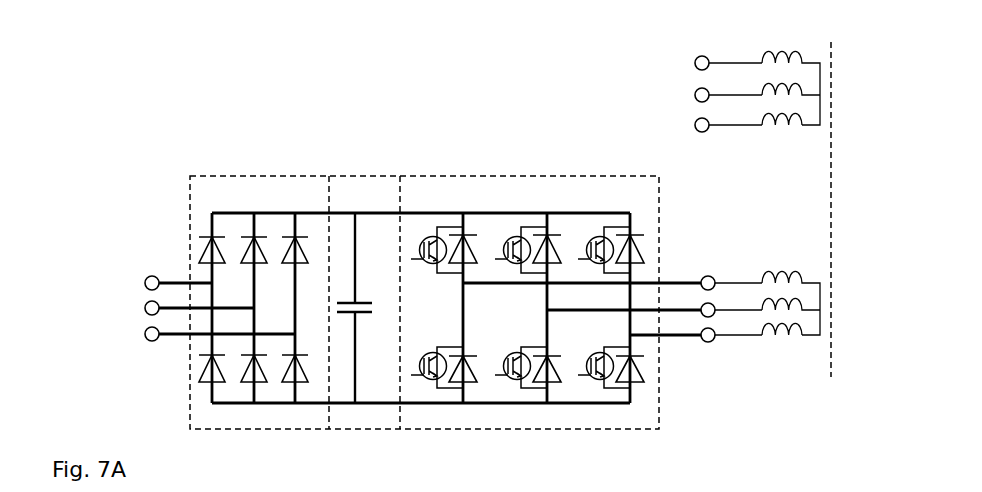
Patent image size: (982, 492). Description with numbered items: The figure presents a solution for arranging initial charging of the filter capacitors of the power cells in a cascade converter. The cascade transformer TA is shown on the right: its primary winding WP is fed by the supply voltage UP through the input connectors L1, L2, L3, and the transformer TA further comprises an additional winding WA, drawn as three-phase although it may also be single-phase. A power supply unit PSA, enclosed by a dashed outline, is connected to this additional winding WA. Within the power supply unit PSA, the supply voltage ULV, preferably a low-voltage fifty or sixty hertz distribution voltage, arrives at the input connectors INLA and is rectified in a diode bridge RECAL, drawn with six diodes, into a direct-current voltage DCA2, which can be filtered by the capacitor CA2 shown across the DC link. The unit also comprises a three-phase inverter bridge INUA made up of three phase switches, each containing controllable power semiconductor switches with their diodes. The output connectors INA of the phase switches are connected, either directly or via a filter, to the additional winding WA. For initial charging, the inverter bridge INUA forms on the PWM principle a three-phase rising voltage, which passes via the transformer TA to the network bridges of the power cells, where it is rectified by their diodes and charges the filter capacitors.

The power supply unit PSA is at (424, 288).
The diode bridge RECAL is at (414, 302).
The direct-current voltage DCA2 is at (370, 302).
The capacitor CA2 is at (364, 308).
The three-phase inverter bridge INUA is at (556, 296).
The low-voltage input terminals INLA is at (212, 296).
The supply voltage ULV is at (82, 297).
The output connectors INA is at (706, 296).
The additional winding WA is at (767, 291).
The cascade transformer TA is at (832, 196).
The primary winding WP is at (764, 75).
The input connector L1 is at (685, 66).
The input connector L2 is at (685, 97).
The input connector L3 is at (685, 127).
The supply voltage UP is at (596, 78).